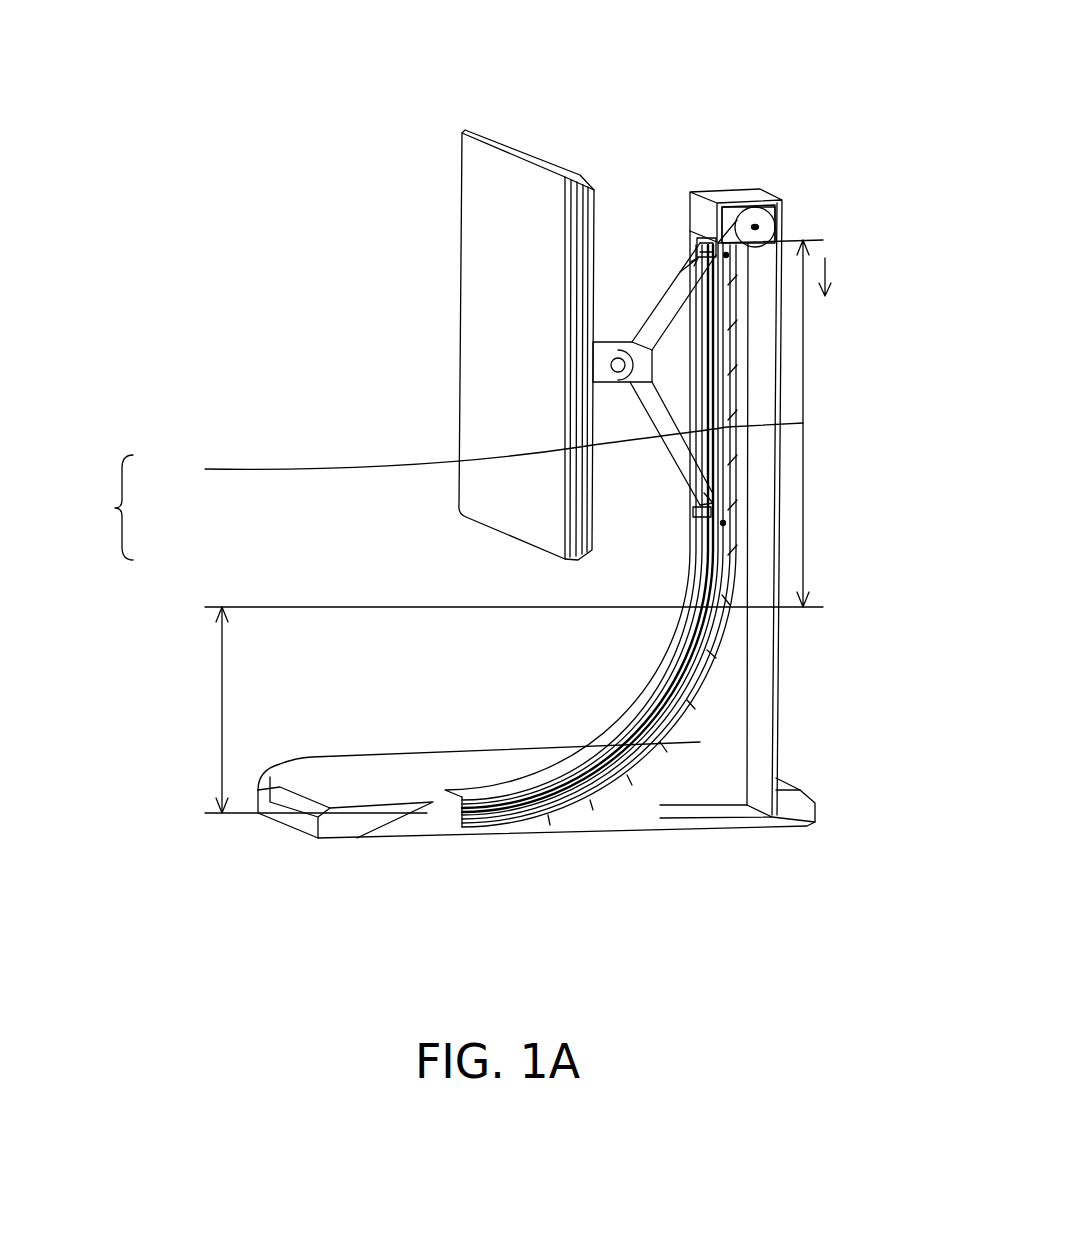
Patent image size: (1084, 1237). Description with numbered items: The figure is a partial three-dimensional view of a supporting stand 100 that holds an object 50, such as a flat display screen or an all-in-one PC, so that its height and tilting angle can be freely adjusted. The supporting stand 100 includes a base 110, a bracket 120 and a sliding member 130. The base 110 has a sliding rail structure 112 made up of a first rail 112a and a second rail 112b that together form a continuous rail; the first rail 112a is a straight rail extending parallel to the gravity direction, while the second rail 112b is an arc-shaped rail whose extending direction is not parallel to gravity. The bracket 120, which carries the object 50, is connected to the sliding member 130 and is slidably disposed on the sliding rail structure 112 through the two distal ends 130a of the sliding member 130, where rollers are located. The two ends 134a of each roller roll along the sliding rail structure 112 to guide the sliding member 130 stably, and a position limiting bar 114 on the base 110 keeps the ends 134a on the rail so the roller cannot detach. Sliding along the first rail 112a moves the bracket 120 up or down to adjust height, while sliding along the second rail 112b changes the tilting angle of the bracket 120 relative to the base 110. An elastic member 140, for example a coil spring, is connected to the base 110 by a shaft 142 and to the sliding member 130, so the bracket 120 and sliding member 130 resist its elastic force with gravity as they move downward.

The supporting stand 100 is at (832, 26).
The object 50 is at (503, 162).
The base 110 is at (762, 686).
The sliding rail structure 112 is at (445, 618).
The first rail 112a is at (473, 454).
The second rail 112b is at (222, 712).
The position limiting bar 114 is at (727, 378).
The bracket 120 is at (612, 342).
The sliding member 130 is at (660, 358).
The distal ends 130a is at (678, 275).
The ends of the roller 134a is at (728, 256).
The elastic member 140 is at (753, 208).
The shaft 142 is at (755, 226).